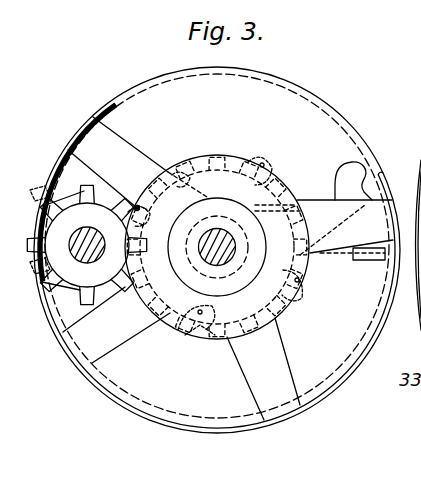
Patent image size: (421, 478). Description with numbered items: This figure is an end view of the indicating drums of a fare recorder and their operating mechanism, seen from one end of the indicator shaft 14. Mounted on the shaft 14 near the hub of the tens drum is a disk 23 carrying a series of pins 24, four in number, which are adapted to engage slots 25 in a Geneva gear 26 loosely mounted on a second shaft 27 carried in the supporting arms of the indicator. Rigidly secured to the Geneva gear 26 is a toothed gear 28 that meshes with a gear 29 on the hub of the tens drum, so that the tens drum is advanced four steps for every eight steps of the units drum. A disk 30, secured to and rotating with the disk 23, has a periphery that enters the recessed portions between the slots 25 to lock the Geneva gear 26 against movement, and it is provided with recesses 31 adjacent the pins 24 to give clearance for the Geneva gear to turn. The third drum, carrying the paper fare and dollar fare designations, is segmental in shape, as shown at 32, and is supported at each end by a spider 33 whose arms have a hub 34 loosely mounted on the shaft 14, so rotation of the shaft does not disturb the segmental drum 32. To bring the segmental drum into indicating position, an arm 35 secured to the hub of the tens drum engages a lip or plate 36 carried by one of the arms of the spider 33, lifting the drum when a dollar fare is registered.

The shaft 14 is at (205, 229).
The disk 23 is at (296, 296).
The pins 24 is at (258, 165).
The slots 25 is at (92, 316).
The Geneva gear 26 is at (38, 305).
The second shaft 27 is at (136, 206).
The toothed gear 28 is at (42, 207).
The gear 29 is at (178, 177).
The disk 30 is at (263, 328).
The recesses 31 is at (193, 334).
The segmental drum 32 is at (252, 430).
The spider 33 is at (337, 244).
The hub 34 is at (232, 214).
The arm 35 is at (355, 163).
The lip or plate 36 is at (365, 260).